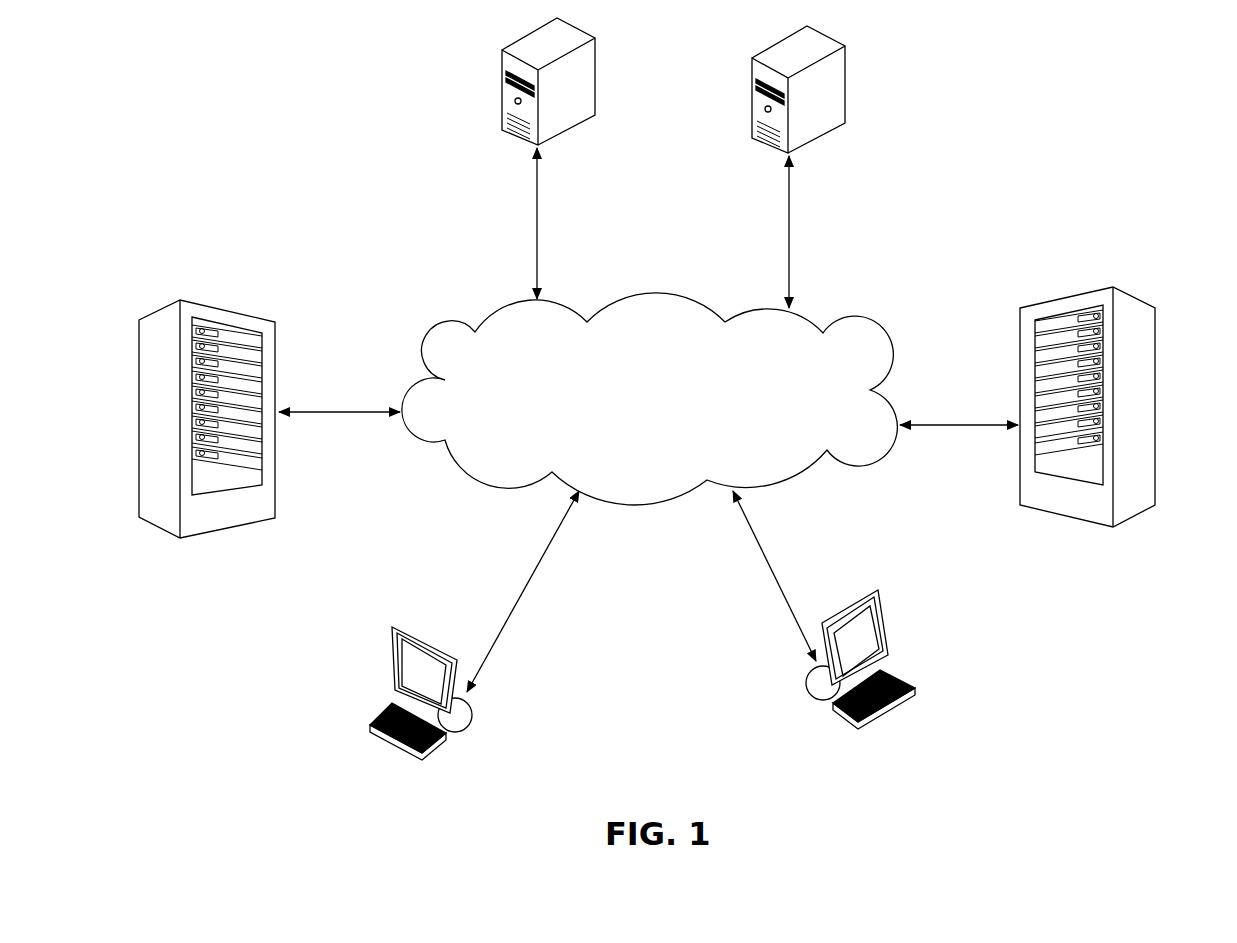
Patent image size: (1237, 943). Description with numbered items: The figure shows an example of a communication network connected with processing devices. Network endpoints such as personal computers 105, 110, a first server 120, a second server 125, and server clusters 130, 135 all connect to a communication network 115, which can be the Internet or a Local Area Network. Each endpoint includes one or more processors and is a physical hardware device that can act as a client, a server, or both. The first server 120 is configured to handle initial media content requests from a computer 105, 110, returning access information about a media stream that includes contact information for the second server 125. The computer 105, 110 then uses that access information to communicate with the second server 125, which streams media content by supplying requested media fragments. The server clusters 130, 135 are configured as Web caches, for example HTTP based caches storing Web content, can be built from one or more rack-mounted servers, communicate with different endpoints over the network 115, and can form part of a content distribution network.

The personal computer 105 is at (456, 738).
The personal computer 110 is at (807, 689).
The communication network 115 is at (871, 337).
The first server 120 is at (597, 99).
The second server 125 is at (851, 107).
The server cluster 130 is at (179, 298).
The server cluster 135 is at (1157, 307).